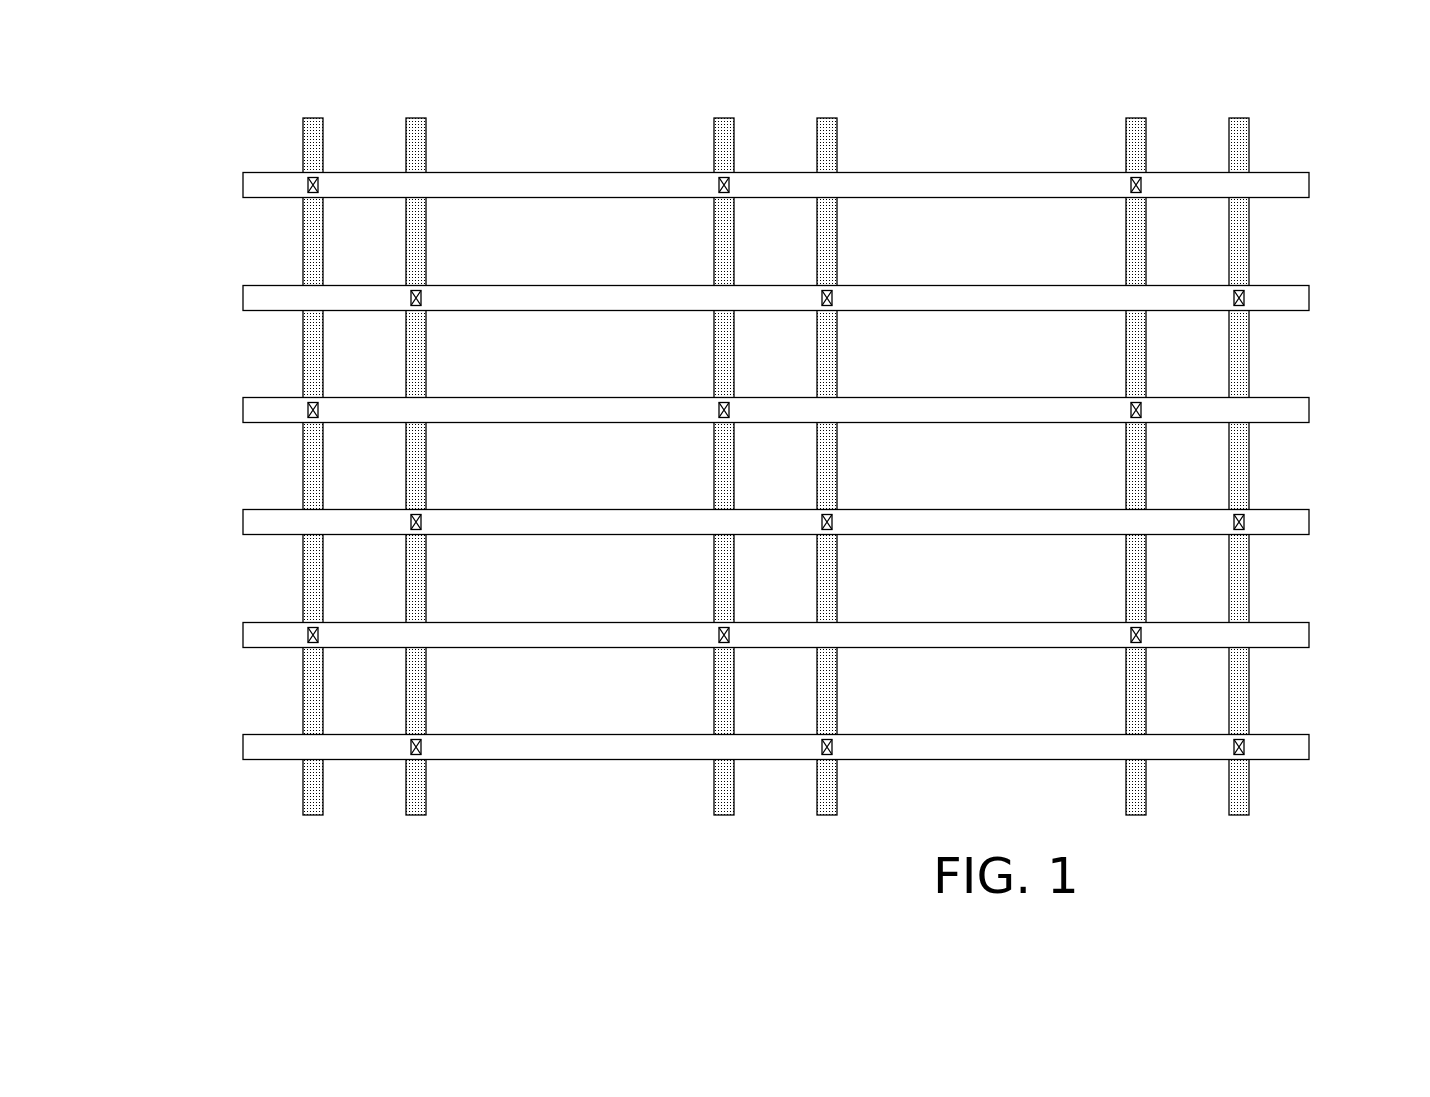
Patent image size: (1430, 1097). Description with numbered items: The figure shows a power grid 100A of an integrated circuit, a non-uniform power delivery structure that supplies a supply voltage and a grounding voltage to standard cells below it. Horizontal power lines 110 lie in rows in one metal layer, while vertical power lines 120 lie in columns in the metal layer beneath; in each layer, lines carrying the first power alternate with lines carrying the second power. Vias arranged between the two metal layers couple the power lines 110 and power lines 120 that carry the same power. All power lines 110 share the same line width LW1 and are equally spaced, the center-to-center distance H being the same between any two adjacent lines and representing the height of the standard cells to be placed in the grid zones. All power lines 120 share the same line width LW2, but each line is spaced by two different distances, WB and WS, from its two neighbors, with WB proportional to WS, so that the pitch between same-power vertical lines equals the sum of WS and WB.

The power grid 100A is at (1280, 107).
The power lines 110 is at (683, 467).
The power lines 120 is at (779, 410).
The distance WS is at (416, 248).
The distance WB is at (724, 359).
The line width LW1 is at (1349, 245).
The line width LW2 is at (1290, 830).
The distance H is at (992, 747).